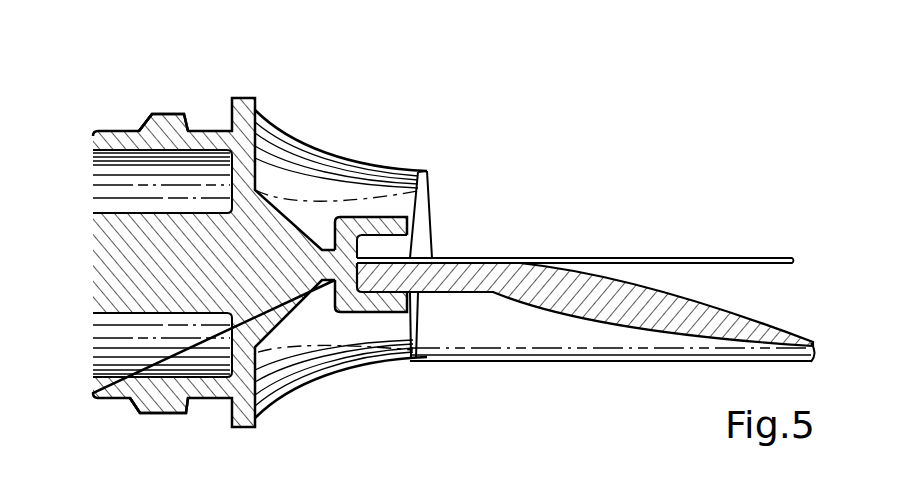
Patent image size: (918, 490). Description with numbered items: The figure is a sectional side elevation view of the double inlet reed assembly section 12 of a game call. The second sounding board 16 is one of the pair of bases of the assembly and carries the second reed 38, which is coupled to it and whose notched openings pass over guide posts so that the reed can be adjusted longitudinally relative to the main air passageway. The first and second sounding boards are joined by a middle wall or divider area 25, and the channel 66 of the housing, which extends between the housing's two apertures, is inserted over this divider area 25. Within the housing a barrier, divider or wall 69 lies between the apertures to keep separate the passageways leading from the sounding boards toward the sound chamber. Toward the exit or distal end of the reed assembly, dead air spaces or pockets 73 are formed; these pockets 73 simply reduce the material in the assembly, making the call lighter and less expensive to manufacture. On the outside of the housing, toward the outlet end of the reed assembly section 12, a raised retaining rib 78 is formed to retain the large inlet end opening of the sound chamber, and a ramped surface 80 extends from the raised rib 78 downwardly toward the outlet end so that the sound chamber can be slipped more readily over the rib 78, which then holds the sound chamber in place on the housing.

The double inlet reed assembly section 12 is at (448, 91).
The second sounding board 16 is at (769, 323).
The middle wall or divider area 25 is at (445, 272).
The second reed 38 is at (673, 257).
The channel 66 is at (387, 243).
The barrier, divider or wall 69 is at (295, 255).
The dead air spaces or pockets 73 is at (96, 153).
The raised retaining rib 78 is at (163, 118).
The ramped surface 80 is at (148, 117).